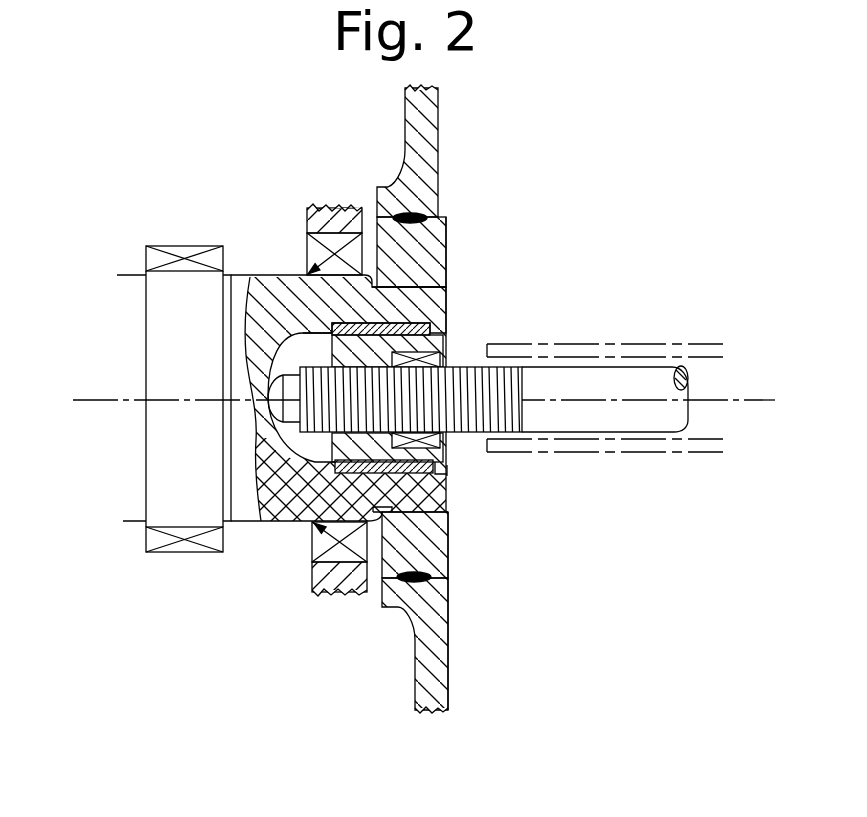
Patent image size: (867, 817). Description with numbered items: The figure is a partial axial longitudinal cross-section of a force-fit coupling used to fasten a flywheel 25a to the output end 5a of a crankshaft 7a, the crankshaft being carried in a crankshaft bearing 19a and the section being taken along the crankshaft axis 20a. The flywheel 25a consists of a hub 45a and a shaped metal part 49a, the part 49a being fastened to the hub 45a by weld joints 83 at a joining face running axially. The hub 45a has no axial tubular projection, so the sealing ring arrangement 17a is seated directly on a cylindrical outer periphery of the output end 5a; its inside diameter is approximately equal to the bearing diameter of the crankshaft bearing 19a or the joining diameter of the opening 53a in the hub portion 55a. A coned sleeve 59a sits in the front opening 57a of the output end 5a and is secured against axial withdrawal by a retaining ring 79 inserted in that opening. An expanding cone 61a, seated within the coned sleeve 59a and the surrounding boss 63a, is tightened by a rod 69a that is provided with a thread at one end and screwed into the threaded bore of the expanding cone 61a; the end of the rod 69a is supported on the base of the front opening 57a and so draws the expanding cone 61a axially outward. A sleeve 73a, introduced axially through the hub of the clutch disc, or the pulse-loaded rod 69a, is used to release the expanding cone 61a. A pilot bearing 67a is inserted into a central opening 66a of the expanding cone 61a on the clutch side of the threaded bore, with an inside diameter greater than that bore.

The output end 5a is at (262, 310).
The crankshaft 7a is at (162, 342).
The bearing 17a is at (335, 222).
The crankshaft bearing 19a is at (180, 253).
The rotation axis 20a is at (100, 402).
The flywheel 25a is at (487, 397).
The hub 45a is at (448, 574).
The shaped metal part 49a is at (440, 131).
The opening 53a is at (448, 500).
The flange hub portion 55a is at (448, 558).
The front opening 57a is at (313, 590).
The coned sleeve 59a is at (310, 465).
The expanding cone 61a is at (333, 442).
The hub boss 63a is at (436, 312).
The central opening 66a is at (448, 438).
The pilot bearing 67a is at (448, 356).
The rod 69a is at (642, 378).
The sleeve 73a is at (687, 445).
The retaining ring 79 is at (448, 473).
The weld joints 83 is at (405, 212).